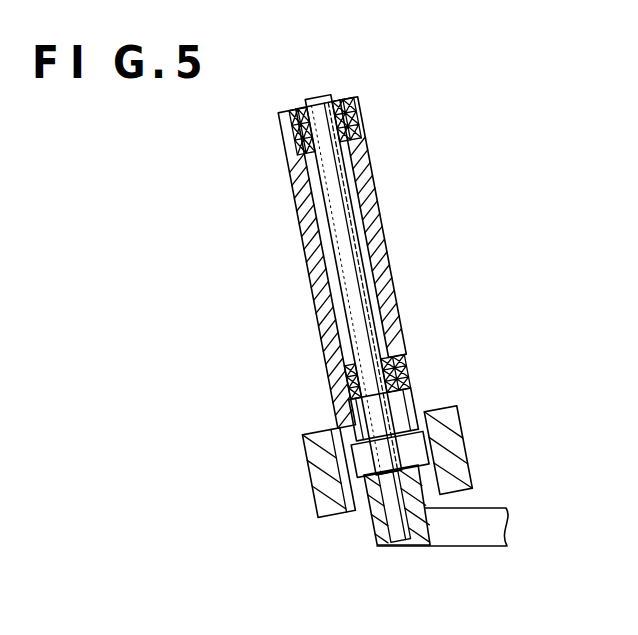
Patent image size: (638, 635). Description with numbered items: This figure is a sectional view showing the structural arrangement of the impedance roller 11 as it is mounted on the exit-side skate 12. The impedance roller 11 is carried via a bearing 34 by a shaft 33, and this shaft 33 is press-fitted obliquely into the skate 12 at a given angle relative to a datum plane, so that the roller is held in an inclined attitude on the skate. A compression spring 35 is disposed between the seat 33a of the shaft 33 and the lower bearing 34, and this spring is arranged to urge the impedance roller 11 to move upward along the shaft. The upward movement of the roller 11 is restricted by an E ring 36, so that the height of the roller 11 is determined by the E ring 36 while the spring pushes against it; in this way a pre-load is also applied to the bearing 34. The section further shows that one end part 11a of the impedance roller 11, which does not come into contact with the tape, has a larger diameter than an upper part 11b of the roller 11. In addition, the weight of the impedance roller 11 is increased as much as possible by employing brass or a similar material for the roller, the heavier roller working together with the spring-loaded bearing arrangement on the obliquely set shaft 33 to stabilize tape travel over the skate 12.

The impedance roller 11 is at (398, 297).
The one end part 11a is at (448, 462).
The upper part 11b is at (376, 245).
The exit-side skate 12 is at (467, 535).
The shaft 33 is at (299, 304).
The seat 33a is at (378, 460).
The bearing 34 is at (295, 157).
The compression spring 35 is at (413, 400).
The E ring 36 is at (338, 98).